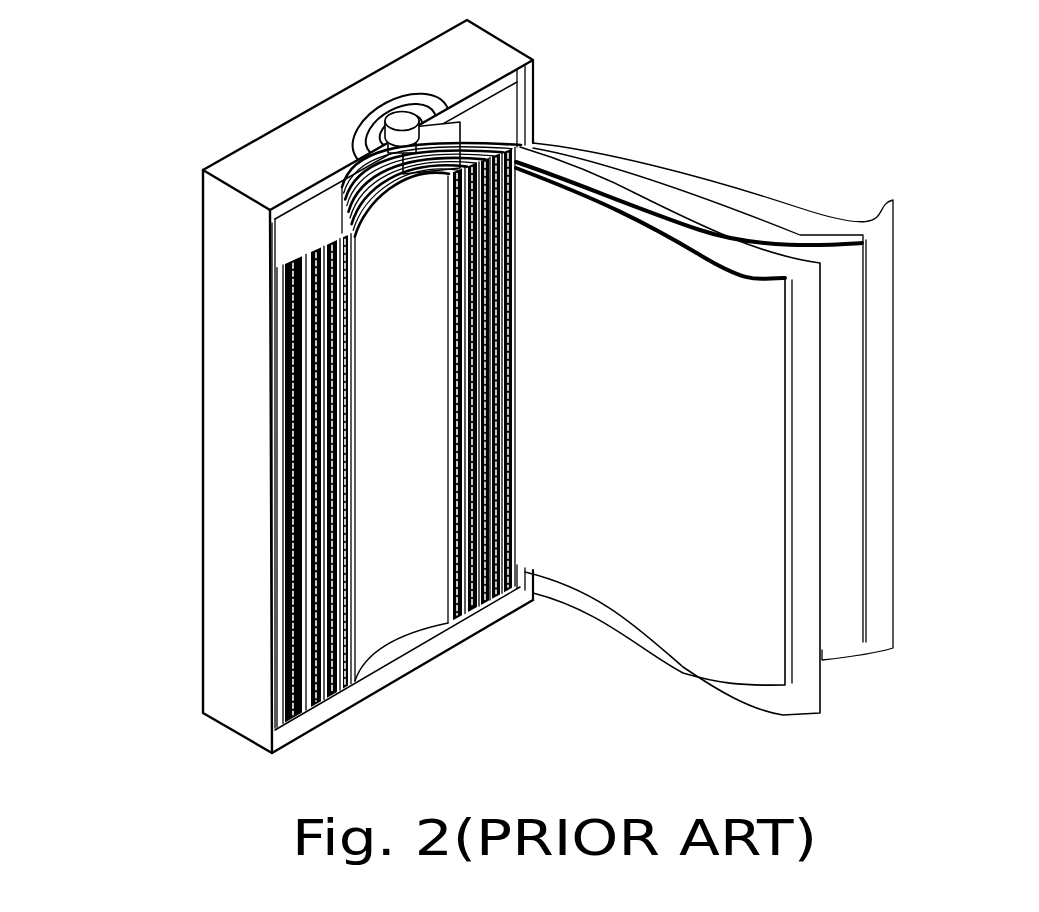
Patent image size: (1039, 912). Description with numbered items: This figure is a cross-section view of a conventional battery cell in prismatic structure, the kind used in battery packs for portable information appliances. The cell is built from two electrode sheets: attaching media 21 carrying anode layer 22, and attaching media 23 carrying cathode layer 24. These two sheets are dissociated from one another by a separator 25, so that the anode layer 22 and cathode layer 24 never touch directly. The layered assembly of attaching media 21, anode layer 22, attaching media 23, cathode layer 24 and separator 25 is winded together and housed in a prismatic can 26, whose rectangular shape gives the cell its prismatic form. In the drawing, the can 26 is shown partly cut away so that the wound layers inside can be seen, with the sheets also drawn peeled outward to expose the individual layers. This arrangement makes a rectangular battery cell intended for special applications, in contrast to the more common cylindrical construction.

The attaching media 21 is at (865, 430).
The anode layer 22 is at (840, 505).
The attaching media 23 is at (745, 560).
The cathode layer 24 is at (793, 613).
The separator 25 is at (803, 355).
The prismatic can 26 is at (240, 355).